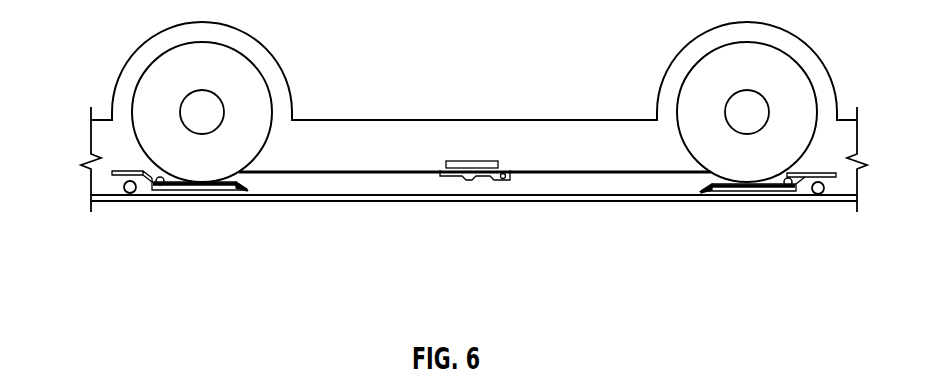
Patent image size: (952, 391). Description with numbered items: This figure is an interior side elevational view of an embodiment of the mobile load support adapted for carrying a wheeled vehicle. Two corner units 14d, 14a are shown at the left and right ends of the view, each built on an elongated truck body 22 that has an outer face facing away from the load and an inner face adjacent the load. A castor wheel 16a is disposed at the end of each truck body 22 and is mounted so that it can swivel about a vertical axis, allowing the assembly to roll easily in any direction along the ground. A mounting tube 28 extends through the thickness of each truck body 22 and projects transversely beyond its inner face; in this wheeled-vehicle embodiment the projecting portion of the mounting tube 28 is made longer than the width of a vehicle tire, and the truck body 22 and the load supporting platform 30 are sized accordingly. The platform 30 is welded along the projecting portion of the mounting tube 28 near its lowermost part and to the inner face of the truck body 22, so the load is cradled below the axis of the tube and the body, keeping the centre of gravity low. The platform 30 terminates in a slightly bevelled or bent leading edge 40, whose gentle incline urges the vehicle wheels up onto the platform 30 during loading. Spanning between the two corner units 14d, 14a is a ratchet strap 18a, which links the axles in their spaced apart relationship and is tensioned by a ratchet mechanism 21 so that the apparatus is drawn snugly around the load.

The corner unit 14d is at (110, 146).
The corner unit 14a is at (838, 146).
The truck body 22 is at (113, 172).
The castor wheel 16a is at (122, 187).
The mounting tube 28 is at (160, 185).
The load supporting platform 30 is at (203, 186).
The bevelled leading edge 40 is at (238, 191).
The ratchet strap 18a is at (530, 173).
The ratchet mechanism 21 is at (477, 165).